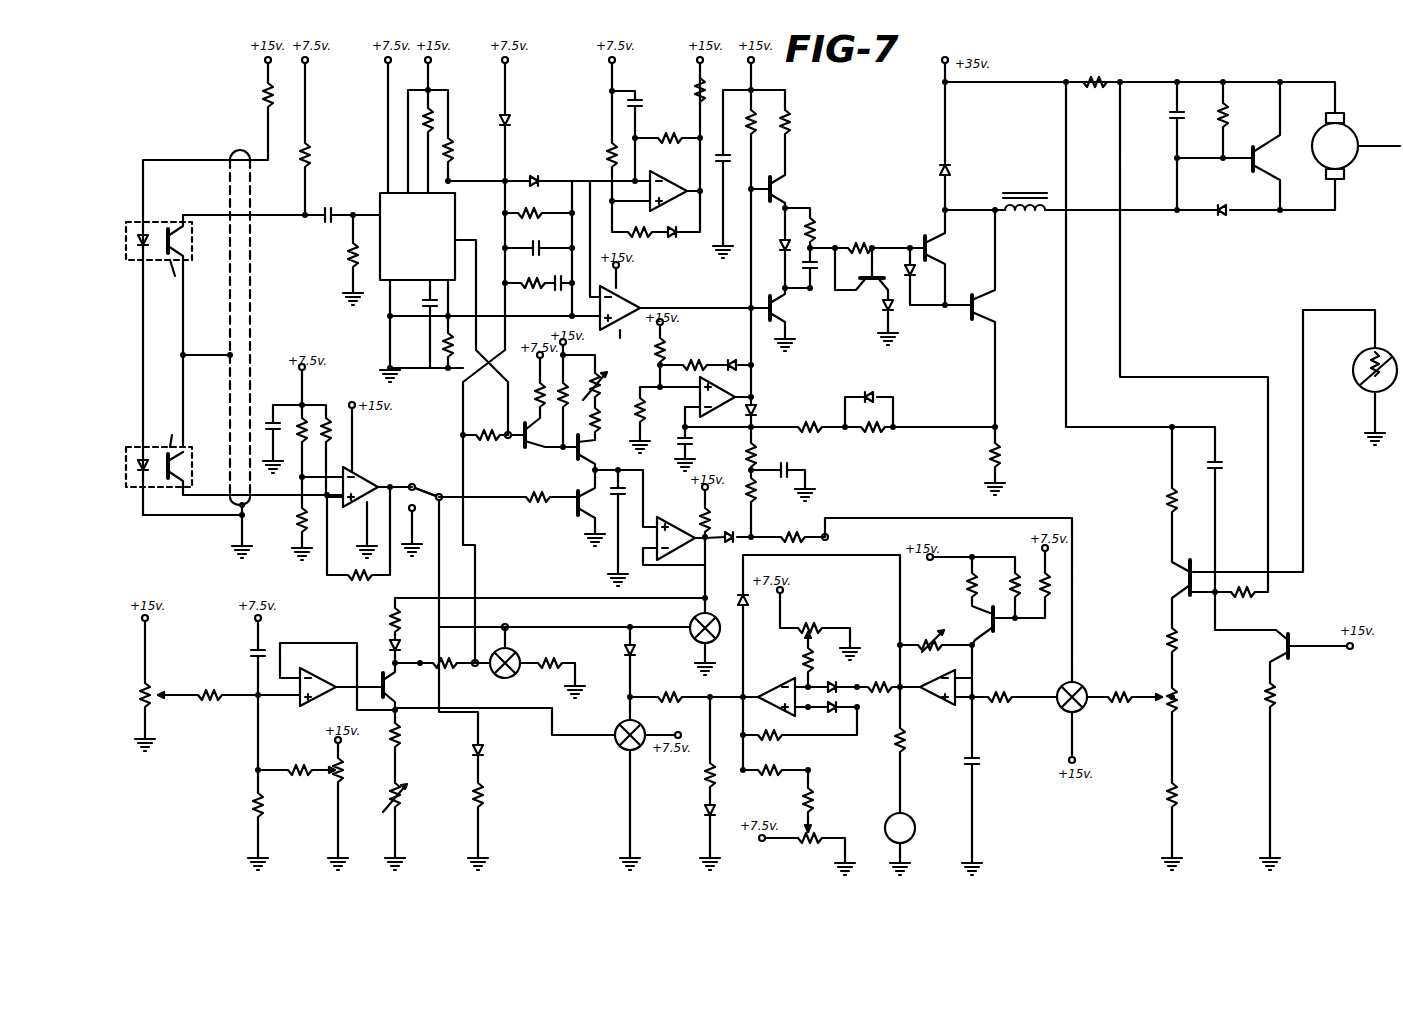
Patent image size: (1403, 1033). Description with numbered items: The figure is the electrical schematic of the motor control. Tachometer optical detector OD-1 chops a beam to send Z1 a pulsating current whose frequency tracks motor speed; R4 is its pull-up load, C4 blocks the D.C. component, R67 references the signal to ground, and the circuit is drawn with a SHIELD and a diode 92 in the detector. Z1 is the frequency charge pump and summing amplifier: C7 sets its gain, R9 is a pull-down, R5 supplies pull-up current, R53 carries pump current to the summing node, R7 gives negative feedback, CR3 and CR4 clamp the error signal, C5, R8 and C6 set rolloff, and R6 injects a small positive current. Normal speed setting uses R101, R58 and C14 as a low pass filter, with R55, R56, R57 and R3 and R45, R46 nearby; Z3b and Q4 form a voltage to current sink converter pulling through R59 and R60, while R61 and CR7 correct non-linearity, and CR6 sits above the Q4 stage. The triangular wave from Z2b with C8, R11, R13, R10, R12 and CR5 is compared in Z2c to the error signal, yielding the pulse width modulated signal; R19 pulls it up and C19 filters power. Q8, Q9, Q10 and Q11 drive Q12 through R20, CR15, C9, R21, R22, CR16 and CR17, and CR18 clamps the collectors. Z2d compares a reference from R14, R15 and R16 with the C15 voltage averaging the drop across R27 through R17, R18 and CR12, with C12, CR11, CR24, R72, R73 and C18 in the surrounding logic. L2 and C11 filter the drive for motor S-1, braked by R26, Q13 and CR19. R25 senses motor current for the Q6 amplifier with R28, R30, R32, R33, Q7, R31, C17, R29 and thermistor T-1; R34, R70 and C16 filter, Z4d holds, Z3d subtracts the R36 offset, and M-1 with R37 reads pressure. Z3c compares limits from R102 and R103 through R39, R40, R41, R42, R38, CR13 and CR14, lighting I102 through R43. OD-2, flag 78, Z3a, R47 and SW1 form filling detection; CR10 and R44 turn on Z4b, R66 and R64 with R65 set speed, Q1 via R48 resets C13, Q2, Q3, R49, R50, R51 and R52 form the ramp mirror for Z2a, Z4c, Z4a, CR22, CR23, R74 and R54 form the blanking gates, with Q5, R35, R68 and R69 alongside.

The shield SHIELD is at (240, 150).
The optical detector OD-1 is at (170, 228).
The optical detector OD-2 is at (135, 488).
The light emitting diode 92 is at (166, 284).
The photon intercepting flag 78 is at (163, 424).
The resistor R3 is at (262, 96).
The pull-up load resistor R4 is at (311, 152).
The pull-up resistor R5 is at (434, 115).
The resistor R6 is at (454, 148).
The feedback resistor R7 is at (522, 212).
The resistor R8 is at (526, 288).
The pull-down resistor R9 is at (452, 355).
The resistor R10 is at (606, 153).
The resistor R11 is at (682, 134).
The resistor R12 is at (645, 228).
The resistor R13 is at (700, 80).
The reference resistor R14 is at (668, 345).
The reference resistor R15 is at (695, 360).
The reference resistor R16 is at (646, 402).
The time constant resistor R17 is at (815, 433).
The time constant resistor R18 is at (875, 433).
The pull-up resistor R19 is at (756, 115).
The current limiting resistor R20 is at (792, 120).
The drive limiting resistor R21 is at (816, 222).
The base resistor R22 is at (858, 242).
The current sensing resistor R25 is at (1096, 76).
The resistor R26 is at (1228, 113).
The current sensing resistor R27 is at (1002, 452).
The resistor R28 is at (1166, 500).
The filter resistor R29 is at (1248, 600).
The resistor R30 is at (1180, 640).
The bias resistor R31 is at (1278, 705).
The span adjustment potentiometer R32 is at (1180, 698).
The resistor R33 is at (1180, 790).
The filter resistor R34 is at (1120, 704).
The resistor R35 is at (965, 583).
The offset trimpot R36 is at (928, 630).
The meter resistor R37 is at (905, 745).
The hysteresis resistor R38 is at (880, 694).
The comparison resistor R39 is at (815, 650).
The comparison resistor R40 is at (815, 798).
The comparison resistor R41 is at (768, 776).
The comparison resistor R42 is at (760, 730).
The indicator resistor R43 is at (704, 772).
The OR gate resistor R44 is at (676, 690).
The resistor R45 is at (298, 450).
The resistor R46 is at (297, 530).
The noise suppressor R47 is at (350, 580).
The current limiting resistor R48 is at (535, 505).
The current mirror resistor R49 is at (590, 428).
The gain trimpot R50 is at (600, 380).
The resistor R51 is at (560, 410).
The current mirror resistor R52 is at (535, 388).
The resistor R53 is at (478, 428).
The pull-up resistor R54 is at (702, 515).
The zero setting trimpot R55 is at (334, 785).
The offset resistor R56 is at (290, 778).
The offset resistor R57 is at (252, 800).
The filter resistor R58 is at (206, 704).
The resistor R59 is at (402, 733).
The calibration trimpot R60 is at (404, 796).
The linearity correction resistor R61 is at (486, 794).
The resistor R64 is at (390, 615).
The normal speed decoupling resistor R65 is at (440, 658).
The filling speed resistor R66 is at (550, 656).
The ground reference resistor R67 is at (348, 258).
The resistor R68 is at (1020, 568).
The resistor R69 is at (1052, 585).
The filter resistor R70 is at (996, 693).
The resistor R72 is at (758, 450).
The AND gate resistor R73 is at (746, 488).
The OR gate resistor R74 is at (832, 542).
The digital potentiometer R101 is at (140, 705).
The upper limit voltage setting means R102 is at (810, 622).
The lower limit voltage setting means R103 is at (810, 848).
The decoupling capacitor C4 is at (326, 224).
The capacitor C5 is at (543, 238).
The capacitor C6 is at (557, 278).
The charge pump capacitor C7 is at (425, 312).
The capacitor C8 is at (640, 100).
The capacitor C9 is at (815, 272).
The filter capacitor C11 is at (1170, 118).
The capacitor C12 is at (273, 415).
The charge integrator capacitor C13 is at (625, 488).
The filter capacitor C14 is at (250, 654).
The signal capacitor C15 is at (693, 440).
The holding capacitor C16 is at (982, 765).
The filter capacitor C17 is at (1223, 465).
The capacitor C18 is at (790, 470).
The filter capacitor C19 is at (730, 158).
The clamping diode CR3 is at (511, 120).
The clamping diode CR4 is at (530, 178).
The diode CR5 is at (673, 240).
The diode CR6 is at (390, 645).
The linearity correction diode CR7 is at (486, 752).
The OR gate diode CR10 is at (626, 656).
The diode CR11 is at (745, 366).
The time constant diode CR12 is at (880, 392).
The upper limit diode CR13 is at (834, 682).
The lower limit diode CR14 is at (836, 716).
The diode CR15 is at (778, 250).
The bypass diode CR16 is at (884, 312).
The diode CR17 is at (912, 278).
The clamp diode CR18 is at (952, 168).
The brake diode CR19 is at (1224, 216).
The AND gate diode CR22 is at (735, 532).
The OR gate diode CR23 is at (740, 594).
The diode CR24 is at (758, 410).
The transistor Q1 is at (572, 510).
The current mirror transistor Q2 is at (574, 460).
The current mirror transistor Q3 is at (520, 450).
The high gain transistor Q4 is at (378, 698).
The transistor Q5 is at (996, 632).
The motor current sensing amplifier transistor Q6 is at (1178, 585).
The bias transistor Q7 is at (1296, 658).
The driver transistor Q8 is at (780, 186).
The driver transistor Q9 is at (780, 318).
The current limiting transistor Q10 is at (868, 290).
The driver transistor Q11 is at (935, 244).
The power switching transistor Q12 is at (982, 303).
The brake transistor Q13 is at (1258, 155).
The frequency charge pump integrated circuit Z1 is at (380, 198).
The comparator Z2a is at (655, 540).
The triangular wave generator Z2b is at (678, 166).
The pulse width modulator comparator Z2c is at (630, 305).
The current limit comparator Z2d is at (730, 380).
The filling amplifier Z3a is at (376, 463).
The voltage to current sink converter amplifier Z3b is at (306, 702).
The limit comparator Z3c is at (778, 680).
The motor current sense amplifier Z3d is at (938, 702).
The bilateral switch Z4a is at (492, 676).
The first switch means Z4b is at (618, 748).
The bilateral switch Z4c is at (692, 618).
The holding switch Z4d is at (1060, 712).
The inductor L2 is at (1012, 214).
The electrical motor S-1 is at (1345, 135).
The thermistor T-1 is at (1362, 362).
The meter M-1 is at (908, 820).
The slider switch SW1 is at (432, 485).
The light emitting diode I102 is at (704, 812).